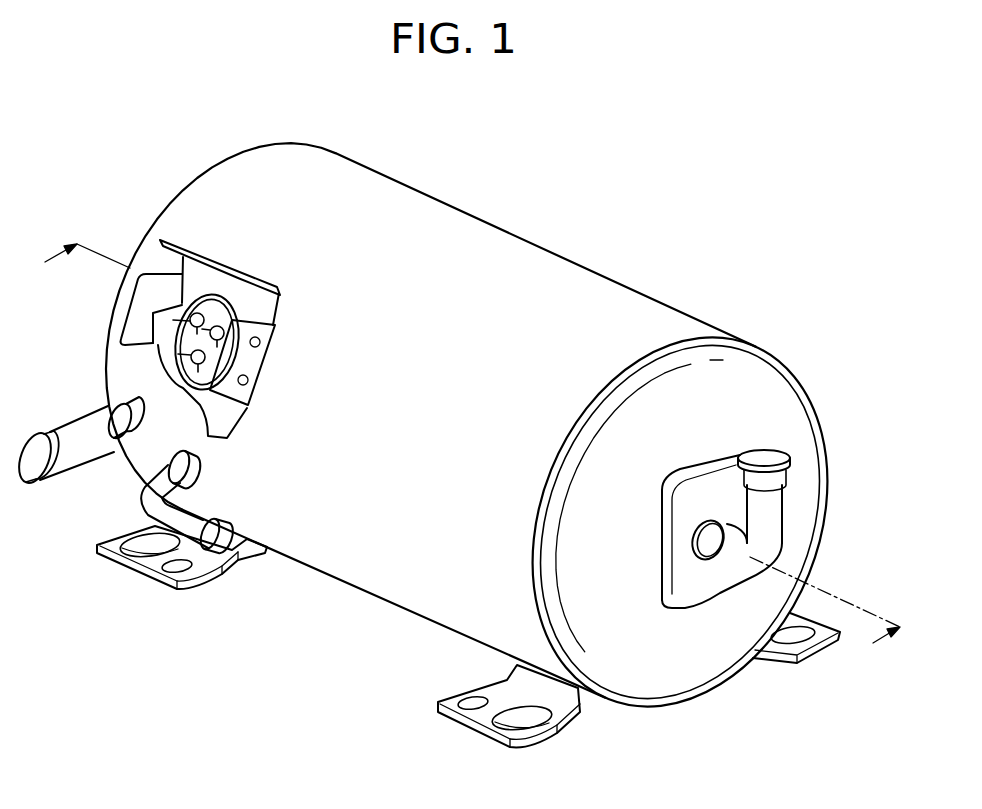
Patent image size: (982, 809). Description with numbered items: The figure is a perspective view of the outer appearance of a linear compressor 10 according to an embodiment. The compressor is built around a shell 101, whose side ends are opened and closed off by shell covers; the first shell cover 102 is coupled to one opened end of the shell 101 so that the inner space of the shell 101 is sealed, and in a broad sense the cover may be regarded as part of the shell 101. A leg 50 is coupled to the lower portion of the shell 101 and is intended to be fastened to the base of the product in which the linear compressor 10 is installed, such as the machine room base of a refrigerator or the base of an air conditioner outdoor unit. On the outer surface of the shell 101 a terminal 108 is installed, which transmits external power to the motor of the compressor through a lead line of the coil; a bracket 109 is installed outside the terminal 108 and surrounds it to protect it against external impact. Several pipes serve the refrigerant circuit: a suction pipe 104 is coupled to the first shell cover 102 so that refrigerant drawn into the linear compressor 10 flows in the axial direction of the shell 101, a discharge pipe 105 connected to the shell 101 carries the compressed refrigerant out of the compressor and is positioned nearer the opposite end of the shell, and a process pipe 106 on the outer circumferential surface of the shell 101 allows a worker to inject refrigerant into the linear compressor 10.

The linear compressor 10 is at (552, 183).
The shell 101 is at (584, 294).
The first shell cover 102 is at (753, 403).
The suction pipe 104 is at (730, 556).
The discharge pipe 105 is at (153, 500).
The process pipe 106 is at (110, 418).
The terminal 108 is at (183, 303).
The bracket 109 is at (207, 257).
The leg 50 is at (450, 702).